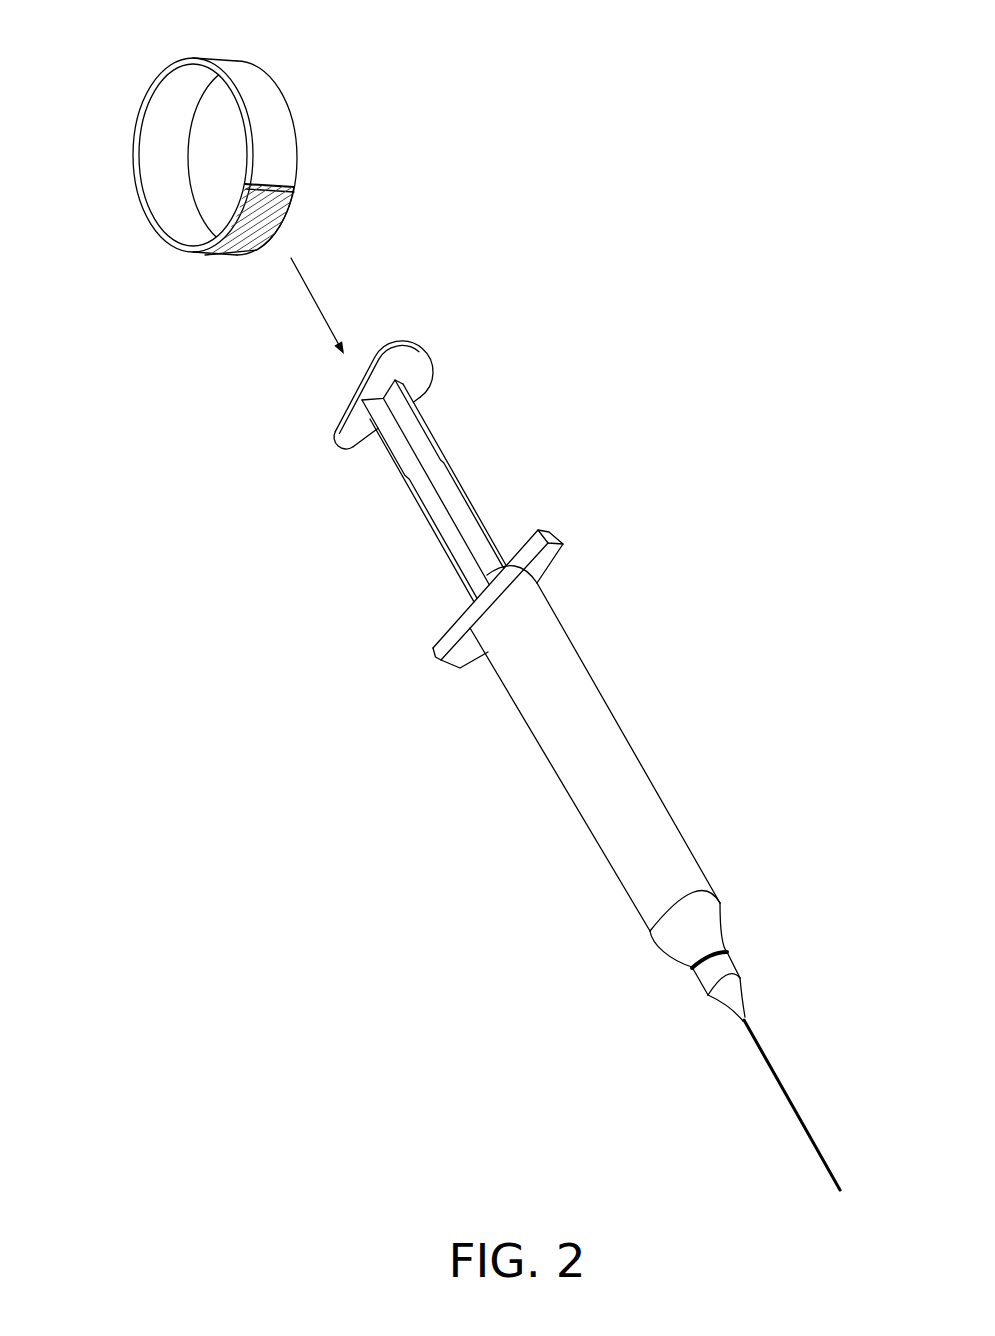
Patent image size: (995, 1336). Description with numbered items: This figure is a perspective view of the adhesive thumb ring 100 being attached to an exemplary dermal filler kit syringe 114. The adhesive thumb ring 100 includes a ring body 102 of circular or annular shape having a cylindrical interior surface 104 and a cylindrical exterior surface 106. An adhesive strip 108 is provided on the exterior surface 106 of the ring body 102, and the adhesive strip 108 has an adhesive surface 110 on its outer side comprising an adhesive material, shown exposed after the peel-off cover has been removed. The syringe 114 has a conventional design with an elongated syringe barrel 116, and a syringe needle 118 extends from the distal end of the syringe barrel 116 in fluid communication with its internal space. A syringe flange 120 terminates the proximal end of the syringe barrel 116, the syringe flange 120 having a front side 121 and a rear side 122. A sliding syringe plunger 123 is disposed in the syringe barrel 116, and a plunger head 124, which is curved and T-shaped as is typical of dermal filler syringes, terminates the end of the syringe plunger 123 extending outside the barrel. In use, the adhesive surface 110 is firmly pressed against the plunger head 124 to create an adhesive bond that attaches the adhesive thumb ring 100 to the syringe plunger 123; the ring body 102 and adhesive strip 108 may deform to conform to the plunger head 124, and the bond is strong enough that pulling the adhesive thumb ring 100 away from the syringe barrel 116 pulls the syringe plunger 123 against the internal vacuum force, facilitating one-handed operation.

The adhesive thumb ring 100 is at (210, 187).
The ring body 102 is at (290, 93).
The interior surface 104 is at (163, 196).
The exterior surface 106 is at (287, 137).
The adhesive strip 108 is at (282, 183).
The adhesive surface 110 is at (276, 211).
The syringe 114 is at (590, 765).
The syringe barrel 116 is at (633, 773).
The syringe needle 118 is at (781, 1063).
The syringe flange 120 is at (565, 538).
The front side 121 is at (546, 563).
The rear side 122 is at (537, 580).
The syringe plunger 123 is at (456, 469).
The plunger head 124 is at (433, 358).